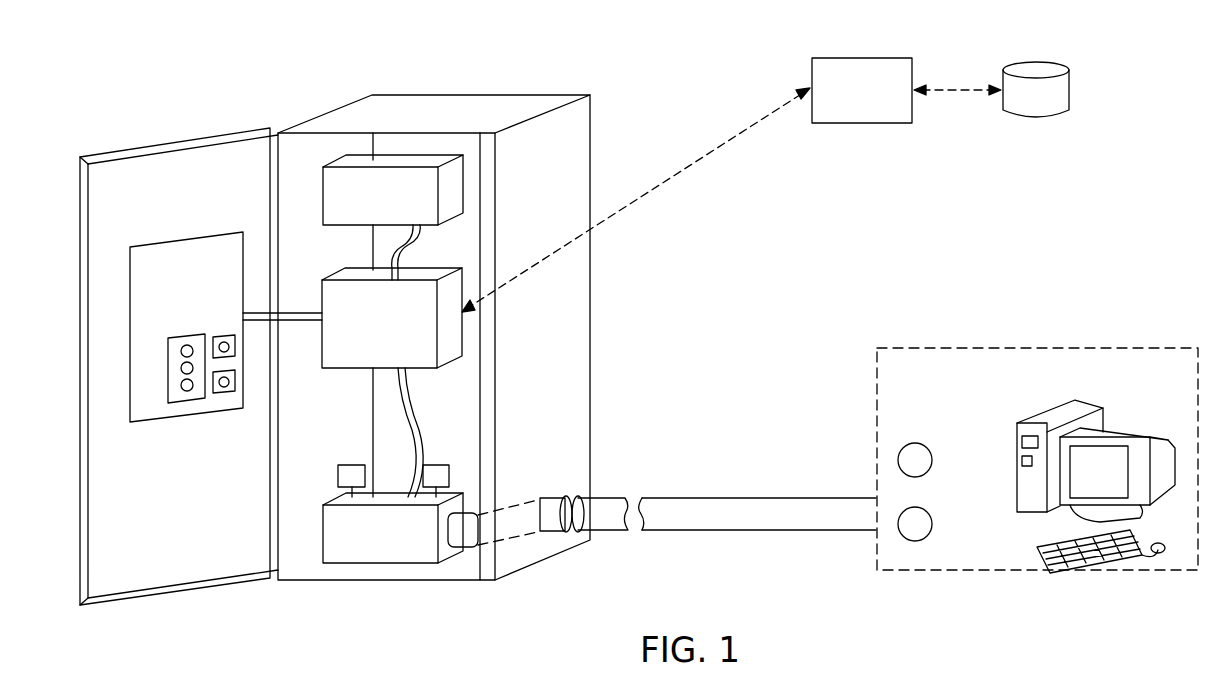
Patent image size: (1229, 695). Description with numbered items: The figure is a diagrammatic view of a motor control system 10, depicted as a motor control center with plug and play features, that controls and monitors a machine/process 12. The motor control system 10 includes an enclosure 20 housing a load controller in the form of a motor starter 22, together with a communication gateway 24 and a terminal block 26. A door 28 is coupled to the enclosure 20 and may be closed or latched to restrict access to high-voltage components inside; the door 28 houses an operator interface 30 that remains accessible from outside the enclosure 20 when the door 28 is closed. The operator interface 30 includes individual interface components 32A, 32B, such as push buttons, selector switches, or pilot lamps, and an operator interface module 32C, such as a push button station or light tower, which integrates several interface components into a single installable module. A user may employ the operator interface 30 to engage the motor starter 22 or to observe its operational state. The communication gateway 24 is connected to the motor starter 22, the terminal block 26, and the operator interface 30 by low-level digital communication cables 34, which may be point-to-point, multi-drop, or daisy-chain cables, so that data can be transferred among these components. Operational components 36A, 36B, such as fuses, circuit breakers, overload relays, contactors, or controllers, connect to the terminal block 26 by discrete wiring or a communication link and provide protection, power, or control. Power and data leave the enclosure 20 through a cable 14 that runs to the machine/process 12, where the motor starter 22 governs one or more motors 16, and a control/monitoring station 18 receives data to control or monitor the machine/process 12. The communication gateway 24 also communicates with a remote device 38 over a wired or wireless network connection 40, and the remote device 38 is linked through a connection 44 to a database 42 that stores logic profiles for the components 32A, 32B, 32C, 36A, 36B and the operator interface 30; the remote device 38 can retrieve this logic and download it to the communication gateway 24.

The motor control system 10 is at (228, 78).
The machine/process 12 is at (1036, 347).
The cable 14 is at (735, 510).
The motors 16 is at (932, 462).
The control/monitoring station 18 is at (1112, 406).
The enclosure 20 is at (487, 98).
The motor starter 22 is at (337, 162).
The communication gateway 24 is at (337, 268).
The terminal block 26 is at (335, 503).
The door 28 is at (138, 180).
The operator interface 30 is at (182, 237).
The interface component 32A is at (226, 336).
The interface component 32B is at (227, 395).
The operator interface module 32C is at (185, 407).
The digital communication cables 34 is at (290, 322).
The operational component 36A is at (438, 463).
The operational component 36B is at (350, 463).
The remote device 38 is at (862, 57).
The network connection 40 is at (640, 200).
The database 42 is at (1072, 86).
The connection 44 is at (935, 95).